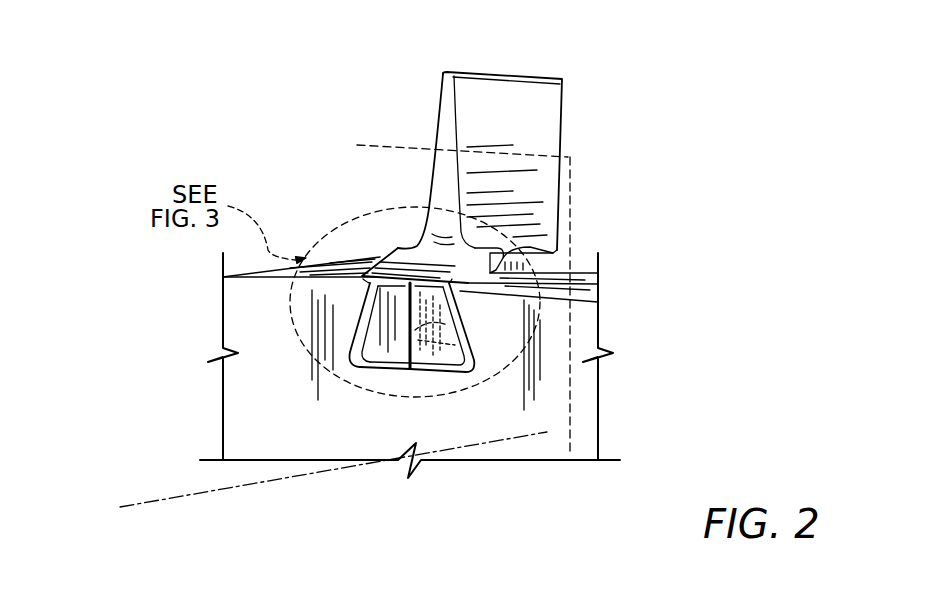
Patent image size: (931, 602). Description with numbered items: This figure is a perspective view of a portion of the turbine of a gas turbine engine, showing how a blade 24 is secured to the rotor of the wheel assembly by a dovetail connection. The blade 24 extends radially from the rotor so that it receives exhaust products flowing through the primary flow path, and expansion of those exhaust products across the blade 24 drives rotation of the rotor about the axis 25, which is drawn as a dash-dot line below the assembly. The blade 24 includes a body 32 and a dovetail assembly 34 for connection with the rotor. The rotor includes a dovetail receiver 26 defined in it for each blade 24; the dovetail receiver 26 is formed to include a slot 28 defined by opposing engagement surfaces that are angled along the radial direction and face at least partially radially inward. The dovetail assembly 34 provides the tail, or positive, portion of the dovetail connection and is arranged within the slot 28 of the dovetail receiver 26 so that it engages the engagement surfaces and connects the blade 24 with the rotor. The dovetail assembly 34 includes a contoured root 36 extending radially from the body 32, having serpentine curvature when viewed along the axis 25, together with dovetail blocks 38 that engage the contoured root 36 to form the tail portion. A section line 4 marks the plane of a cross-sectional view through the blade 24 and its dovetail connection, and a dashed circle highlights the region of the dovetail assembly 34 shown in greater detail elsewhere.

The section line 4- 4 is at (357, 145).
The blade 24 is at (581, 86).
The axis 25 is at (137, 500).
The dovetail receiver 26 is at (477, 387).
The slot 28 is at (363, 389).
The body 32 is at (422, 170).
The dovetail assembly 34 is at (361, 351).
The contoured root 36 is at (398, 301).
The dovetail blocks 38 is at (376, 318).